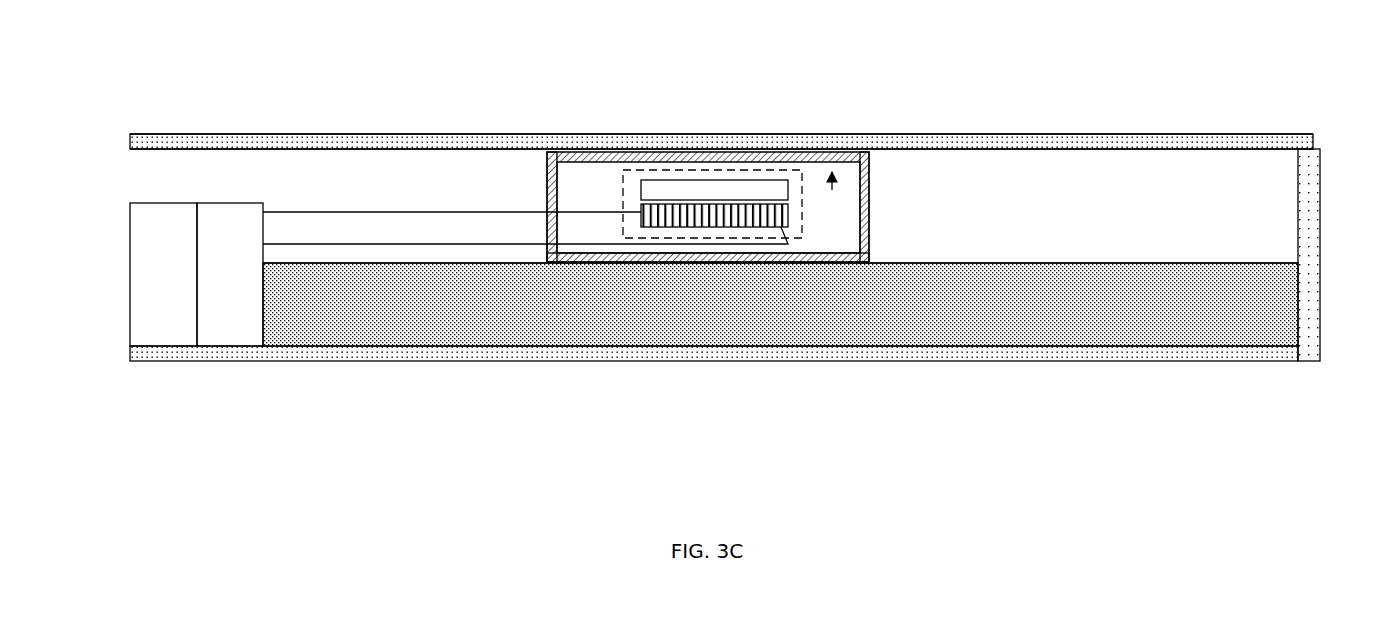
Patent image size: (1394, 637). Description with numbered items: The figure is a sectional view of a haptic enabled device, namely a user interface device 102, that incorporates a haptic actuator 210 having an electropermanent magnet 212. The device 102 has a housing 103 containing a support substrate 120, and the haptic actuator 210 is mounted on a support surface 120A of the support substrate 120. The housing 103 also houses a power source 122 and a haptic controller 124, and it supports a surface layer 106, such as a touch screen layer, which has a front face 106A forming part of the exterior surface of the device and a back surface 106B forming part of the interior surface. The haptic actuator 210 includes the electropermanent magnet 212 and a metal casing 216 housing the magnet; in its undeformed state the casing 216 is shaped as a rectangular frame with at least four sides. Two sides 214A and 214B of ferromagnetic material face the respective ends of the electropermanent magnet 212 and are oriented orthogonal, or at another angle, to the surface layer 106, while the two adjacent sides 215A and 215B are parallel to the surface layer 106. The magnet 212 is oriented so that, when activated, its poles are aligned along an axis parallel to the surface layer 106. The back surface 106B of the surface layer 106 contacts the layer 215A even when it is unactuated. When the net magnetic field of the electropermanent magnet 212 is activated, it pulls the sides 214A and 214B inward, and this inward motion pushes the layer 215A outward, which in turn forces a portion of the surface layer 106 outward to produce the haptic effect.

The user interface device 102 is at (248, 95).
The housing 103 is at (1340, 172).
The surface layer 106 is at (1132, 140).
The front face 106A is at (1208, 138).
The back surface 106B is at (1253, 150).
The support substrate 120 is at (1107, 283).
The support surface 120A is at (1037, 267).
The power source 122 is at (248, 330).
The haptic controller 124 is at (162, 333).
The haptic actuator 210 is at (522, 171).
The electropermanent magnet 212 is at (623, 170).
The side of metal casing 214A is at (547, 228).
The side of metal casing 214B is at (868, 192).
The side of metal casing 215A is at (758, 152).
The side of metal casing 215B is at (763, 255).
The metal casing 216 is at (870, 255).